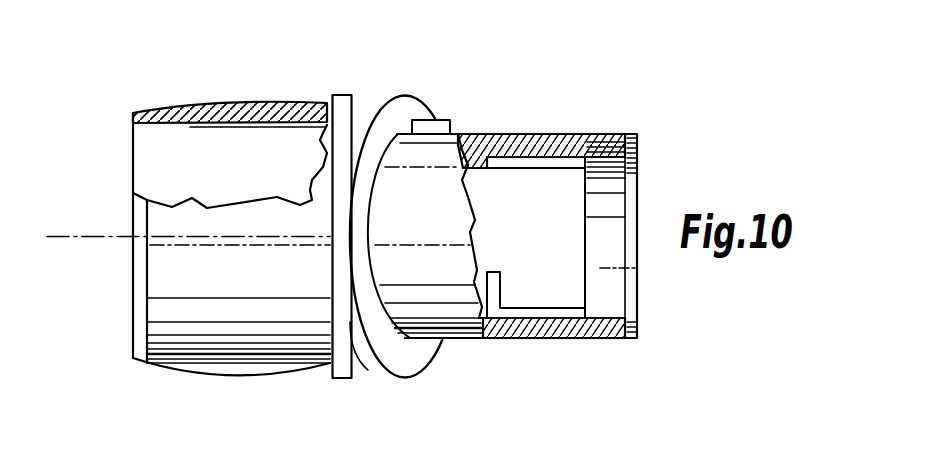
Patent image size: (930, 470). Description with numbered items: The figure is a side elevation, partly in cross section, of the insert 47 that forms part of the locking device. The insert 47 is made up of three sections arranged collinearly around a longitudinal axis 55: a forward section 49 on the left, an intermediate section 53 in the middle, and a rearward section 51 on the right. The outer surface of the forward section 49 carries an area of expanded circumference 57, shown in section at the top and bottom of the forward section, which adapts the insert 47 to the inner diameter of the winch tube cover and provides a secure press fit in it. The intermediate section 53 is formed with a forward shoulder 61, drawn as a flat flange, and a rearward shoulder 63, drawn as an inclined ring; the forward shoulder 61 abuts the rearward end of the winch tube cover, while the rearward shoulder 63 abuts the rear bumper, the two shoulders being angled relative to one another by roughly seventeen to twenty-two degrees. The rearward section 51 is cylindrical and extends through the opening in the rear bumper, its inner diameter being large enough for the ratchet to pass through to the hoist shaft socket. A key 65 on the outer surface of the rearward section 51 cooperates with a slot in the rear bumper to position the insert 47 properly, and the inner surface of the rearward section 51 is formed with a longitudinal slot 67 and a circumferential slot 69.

The insert 47 is at (519, 99).
The forward section 49 is at (160, 303).
The rearward section 51 is at (570, 340).
The intermediate section 53 is at (357, 366).
The longitudinal axis 55 is at (83, 232).
The area of expanded circumference 57 is at (228, 99).
The forward shoulder 61 is at (352, 114).
The rearward shoulder 63 is at (415, 358).
The key 65 is at (437, 118).
The longitudinal slot 67 is at (531, 338).
The circumferential slot 69 is at (497, 292).